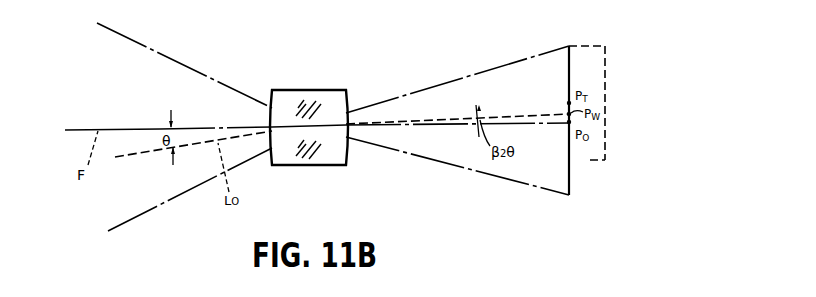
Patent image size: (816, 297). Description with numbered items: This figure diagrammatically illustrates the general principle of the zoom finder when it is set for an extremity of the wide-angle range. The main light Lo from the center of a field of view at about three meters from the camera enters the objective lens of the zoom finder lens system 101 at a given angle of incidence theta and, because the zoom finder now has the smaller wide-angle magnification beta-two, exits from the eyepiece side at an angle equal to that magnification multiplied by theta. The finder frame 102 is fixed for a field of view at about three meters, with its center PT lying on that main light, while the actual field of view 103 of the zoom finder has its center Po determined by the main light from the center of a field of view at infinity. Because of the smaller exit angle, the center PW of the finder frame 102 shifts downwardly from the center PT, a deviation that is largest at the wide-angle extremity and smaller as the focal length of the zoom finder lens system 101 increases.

The zoom finder lens system 101 is at (311, 88).
The finder frame 102 is at (605, 63).
The actual field of view 103 is at (572, 183).